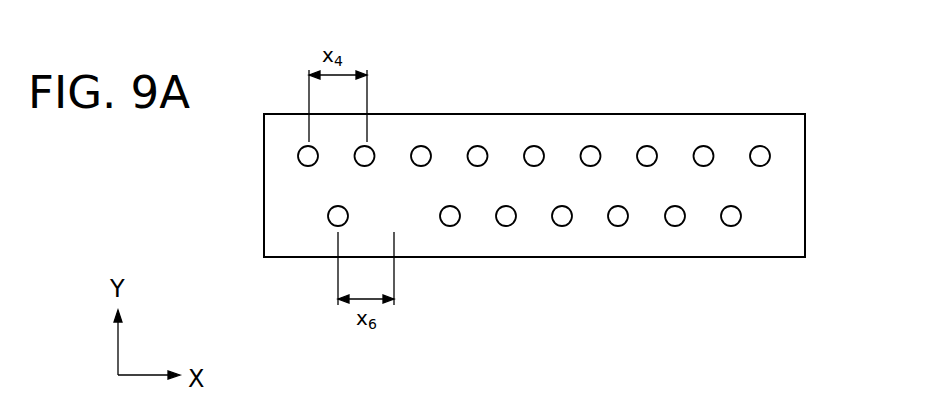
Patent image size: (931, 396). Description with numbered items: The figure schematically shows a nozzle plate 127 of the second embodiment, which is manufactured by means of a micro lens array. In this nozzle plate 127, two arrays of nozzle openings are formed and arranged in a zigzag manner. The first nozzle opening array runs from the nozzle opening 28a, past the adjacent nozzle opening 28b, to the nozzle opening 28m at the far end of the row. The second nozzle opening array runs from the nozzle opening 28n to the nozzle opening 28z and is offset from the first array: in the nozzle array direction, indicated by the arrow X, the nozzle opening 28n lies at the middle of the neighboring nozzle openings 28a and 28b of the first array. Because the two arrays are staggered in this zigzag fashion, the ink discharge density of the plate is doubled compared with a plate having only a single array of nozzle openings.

The nozzle plate 127 is at (787, 190).
The nozzle opening 28a is at (308, 156).
The nozzle opening 28b is at (365, 156).
The nozzle opening 28m is at (760, 156).
The nozzle opening 28n is at (338, 216).
The nozzle opening 28z is at (731, 216).